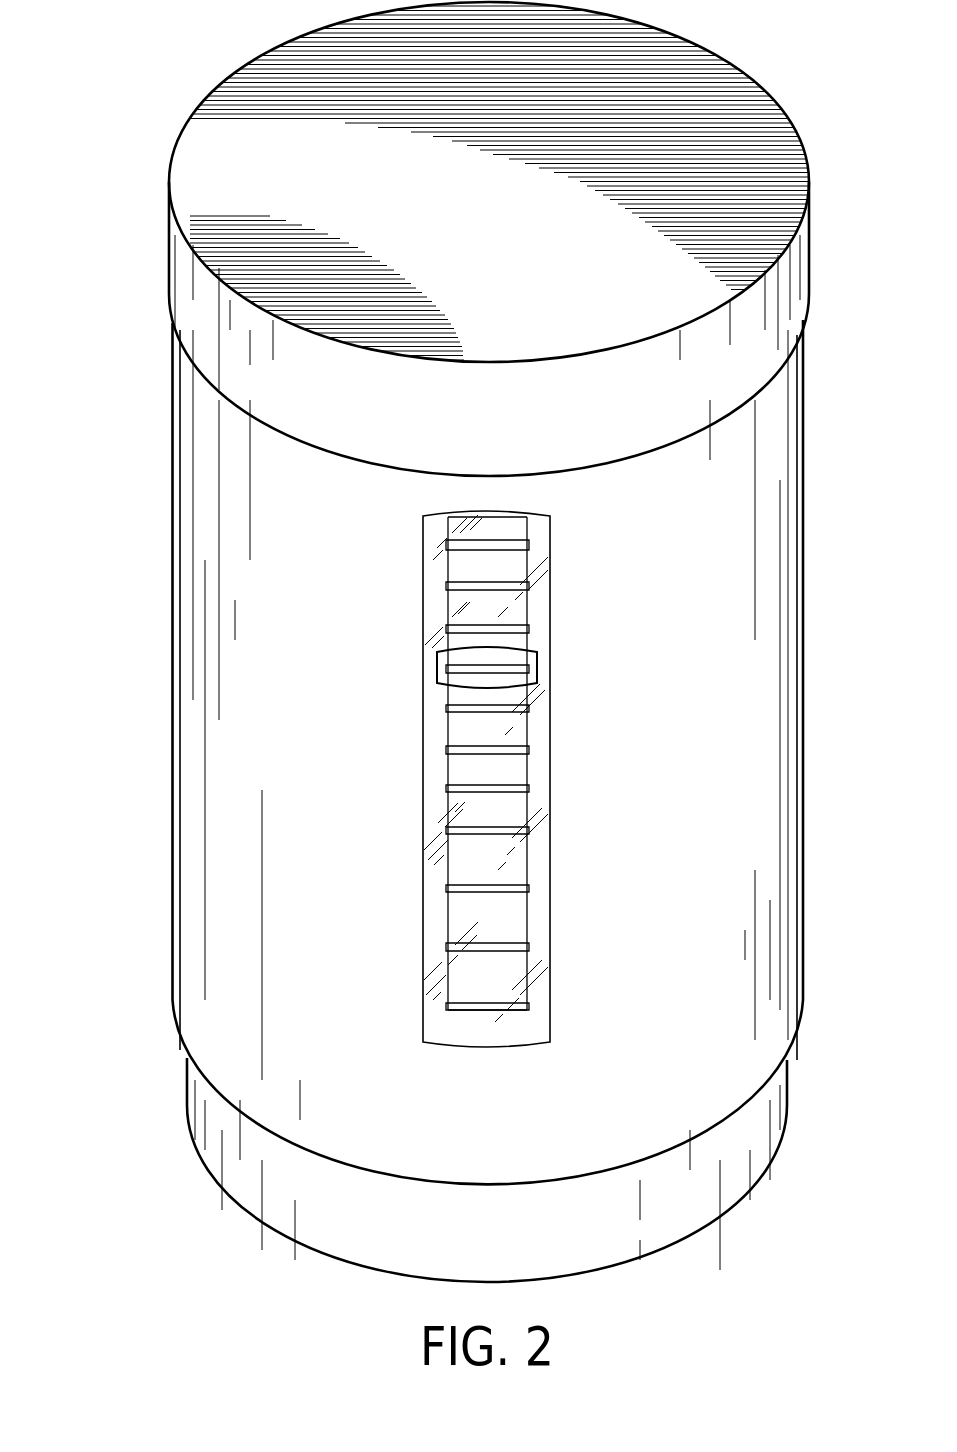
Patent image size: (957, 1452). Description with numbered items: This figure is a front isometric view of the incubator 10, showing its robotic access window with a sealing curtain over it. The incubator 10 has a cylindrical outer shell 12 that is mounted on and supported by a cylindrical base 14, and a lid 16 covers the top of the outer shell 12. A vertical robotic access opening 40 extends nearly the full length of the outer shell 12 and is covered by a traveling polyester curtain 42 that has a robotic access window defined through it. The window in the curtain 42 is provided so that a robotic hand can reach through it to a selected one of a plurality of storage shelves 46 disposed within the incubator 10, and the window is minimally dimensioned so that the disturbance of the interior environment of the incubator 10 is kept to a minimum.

The incubator 10 is at (463, 654).
The cylindrical outer shell 12 is at (773, 478).
The cylindrical base 14 is at (611, 1247).
The lid 16 is at (205, 169).
The vertical robotic access opening 40 is at (493, 779).
The traveling polyester curtain 42 is at (437, 727).
The storage shelves 46 is at (482, 656).